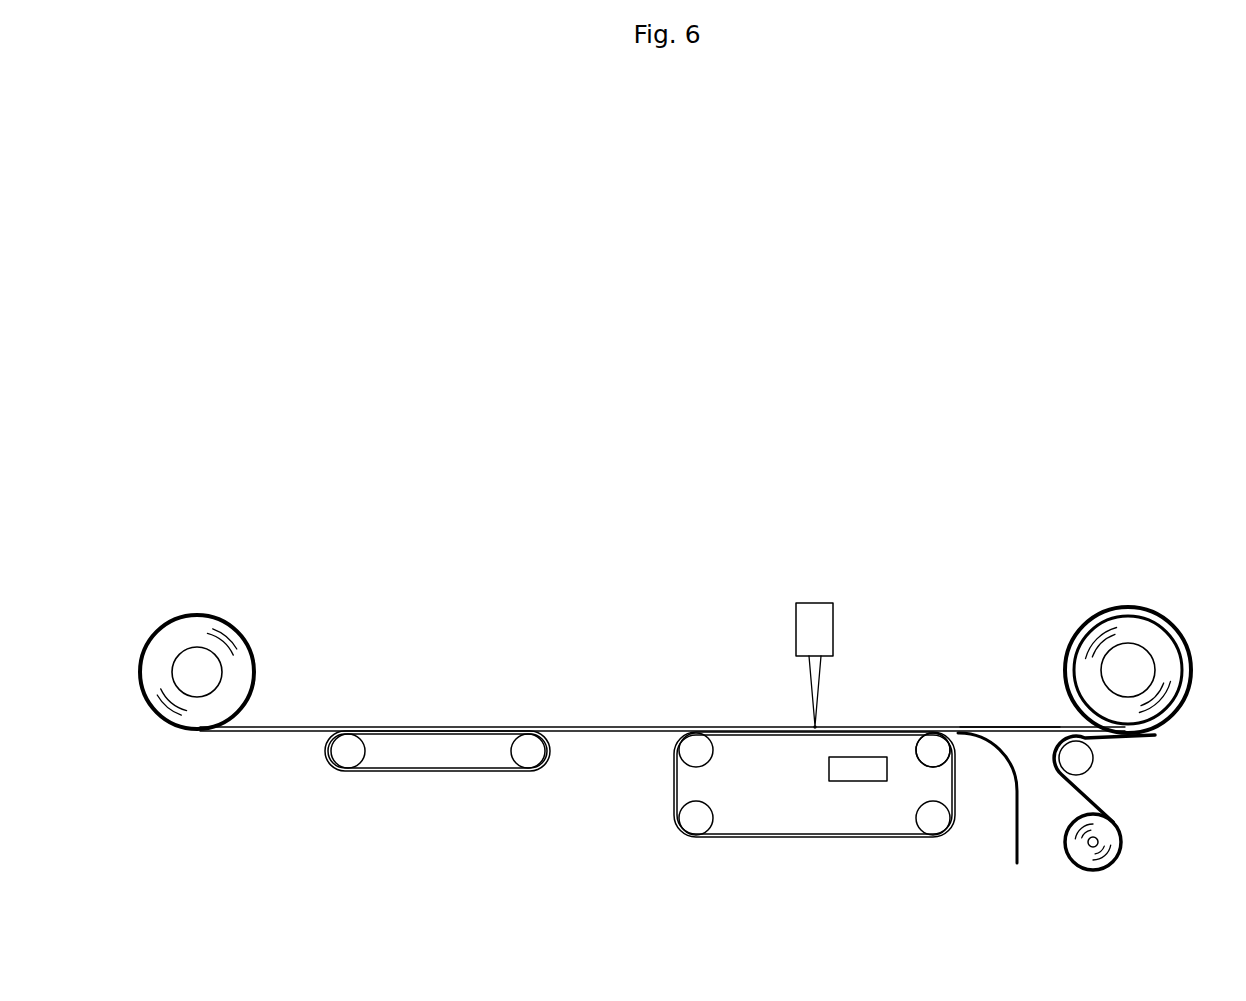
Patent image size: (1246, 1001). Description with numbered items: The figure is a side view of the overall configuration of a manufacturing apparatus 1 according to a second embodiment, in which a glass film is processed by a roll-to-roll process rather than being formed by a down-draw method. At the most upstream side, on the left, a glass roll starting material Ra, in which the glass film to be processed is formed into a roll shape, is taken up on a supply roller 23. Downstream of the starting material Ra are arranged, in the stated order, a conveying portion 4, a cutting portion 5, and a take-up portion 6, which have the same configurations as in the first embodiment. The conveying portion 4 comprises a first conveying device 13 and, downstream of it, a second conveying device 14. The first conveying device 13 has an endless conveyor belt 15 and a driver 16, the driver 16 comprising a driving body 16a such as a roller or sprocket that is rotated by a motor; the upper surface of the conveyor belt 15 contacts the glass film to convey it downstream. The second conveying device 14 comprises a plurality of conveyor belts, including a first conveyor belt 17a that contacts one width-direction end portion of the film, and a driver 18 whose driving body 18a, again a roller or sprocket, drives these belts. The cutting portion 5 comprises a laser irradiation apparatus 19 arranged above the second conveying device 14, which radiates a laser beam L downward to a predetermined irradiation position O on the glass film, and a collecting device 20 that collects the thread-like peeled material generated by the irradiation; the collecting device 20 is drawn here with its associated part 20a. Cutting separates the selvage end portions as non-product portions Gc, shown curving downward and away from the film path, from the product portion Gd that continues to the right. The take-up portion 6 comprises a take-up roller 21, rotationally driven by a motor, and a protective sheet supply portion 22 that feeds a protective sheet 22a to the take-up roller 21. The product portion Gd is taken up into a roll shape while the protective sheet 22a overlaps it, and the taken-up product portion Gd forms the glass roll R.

The manufacturing apparatus 1 is at (793, 372).
The conveying portion 4 is at (406, 839).
The cutting portion 5 is at (881, 589).
The take-up portion 6 is at (1167, 597).
The first conveying device 13 is at (452, 781).
The second conveying device 14 is at (719, 849).
The conveyor belt 15 is at (373, 772).
The driver 16 is at (509, 759).
The driving body 16a is at (532, 754).
The first conveyor belt 17a is at (761, 838).
The driver 18 is at (916, 768).
The driving body 18a is at (942, 750).
The laser irradiation apparatus 19 is at (816, 603).
The collecting device 20 is at (845, 789).
The suction box 20a is at (872, 782).
The take-up roller 21 is at (1140, 663).
The protective sheet supply portion 22 is at (1079, 881).
The protective sheet 22a is at (1088, 792).
The supply roller 23 is at (193, 665).
The glass roll starting material Ra is at (209, 612).
The glass roll R is at (1117, 603).
The product portion Gd is at (1015, 721).
The non-product portion Gc is at (1009, 849).
The laser beam L is at (808, 672).
The irradiation position O is at (812, 722).